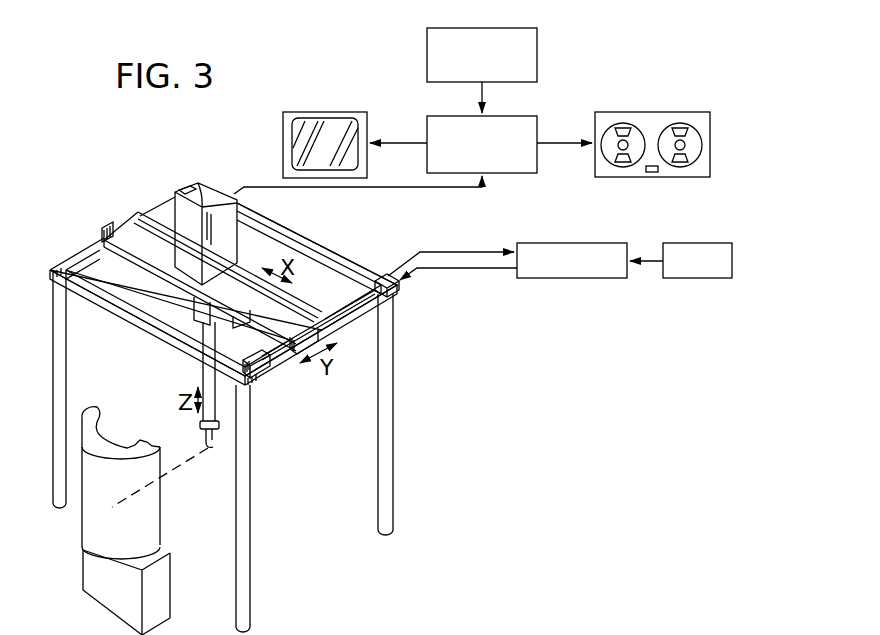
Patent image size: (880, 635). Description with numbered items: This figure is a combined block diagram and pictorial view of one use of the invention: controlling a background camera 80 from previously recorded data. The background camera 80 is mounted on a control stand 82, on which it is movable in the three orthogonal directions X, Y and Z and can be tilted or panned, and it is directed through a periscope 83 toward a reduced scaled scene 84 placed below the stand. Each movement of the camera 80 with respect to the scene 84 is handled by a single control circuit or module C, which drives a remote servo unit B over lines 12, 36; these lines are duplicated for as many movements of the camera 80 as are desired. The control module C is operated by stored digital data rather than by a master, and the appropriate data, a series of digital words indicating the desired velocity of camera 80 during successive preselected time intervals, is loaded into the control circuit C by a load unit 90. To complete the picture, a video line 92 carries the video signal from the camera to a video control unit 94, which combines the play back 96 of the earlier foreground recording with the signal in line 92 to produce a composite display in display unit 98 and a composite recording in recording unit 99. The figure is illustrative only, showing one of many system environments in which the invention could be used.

The line 12 is at (467, 251).
The line 36 is at (472, 269).
The background camera 80 is at (236, 236).
The control stand 82 is at (50, 266).
The periscope 83 is at (213, 400).
The reduced scaled scene 84 is at (92, 516).
The load unit 90 is at (700, 279).
The video line 92 is at (370, 189).
The video control unit 94 is at (522, 170).
The play back 96 is at (536, 41).
The display unit 98 is at (297, 138).
The recording unit 99 is at (710, 163).
The remote servo unit B is at (397, 300).
The control circuit or module C is at (572, 279).